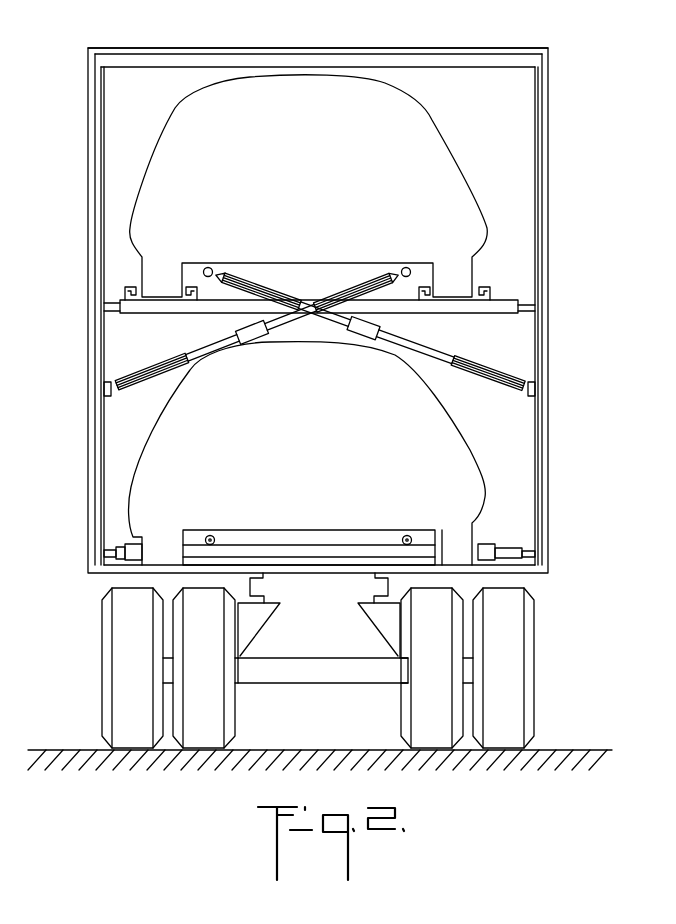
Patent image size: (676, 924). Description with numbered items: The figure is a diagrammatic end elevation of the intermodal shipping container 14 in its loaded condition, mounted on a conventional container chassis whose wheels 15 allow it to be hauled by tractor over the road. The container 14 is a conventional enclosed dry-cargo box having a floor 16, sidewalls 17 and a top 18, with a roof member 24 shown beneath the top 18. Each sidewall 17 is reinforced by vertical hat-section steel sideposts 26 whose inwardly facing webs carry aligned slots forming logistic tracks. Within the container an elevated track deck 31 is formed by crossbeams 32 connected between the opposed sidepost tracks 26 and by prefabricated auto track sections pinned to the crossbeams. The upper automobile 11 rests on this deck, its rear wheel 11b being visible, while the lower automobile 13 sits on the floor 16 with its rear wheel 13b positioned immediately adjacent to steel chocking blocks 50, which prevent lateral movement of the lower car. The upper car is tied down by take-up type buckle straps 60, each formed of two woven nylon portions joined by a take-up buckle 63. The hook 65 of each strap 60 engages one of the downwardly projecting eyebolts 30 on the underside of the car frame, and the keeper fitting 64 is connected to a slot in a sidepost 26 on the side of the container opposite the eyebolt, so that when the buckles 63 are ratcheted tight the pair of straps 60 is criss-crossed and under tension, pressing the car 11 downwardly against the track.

The automobile 11 is at (318, 115).
The rear wheel of automobile 11 11b is at (156, 283).
The automobile 13 is at (318, 444).
The rear wheel of automobile 13 13b is at (162, 531).
The intermodal shipping container 14 is at (556, 466).
The wheels 15 is at (342, 683).
The floor 16 is at (305, 574).
The sidewalls 17 is at (88, 103).
The top 18 is at (246, 53).
The roof liner 24 is at (381, 60).
The vertical sideposts 26 is at (108, 357).
The eyebolts 30 is at (208, 267).
The elevated track deck 31 is at (130, 312).
The crossbeams 32 is at (502, 305).
The chocking blocks 50 is at (104, 548).
The take-up type buckle straps 60 is at (172, 366).
The take-up buckle 63 is at (357, 333).
The keeper fitting 64 is at (110, 397).
The hook 65 is at (225, 278).